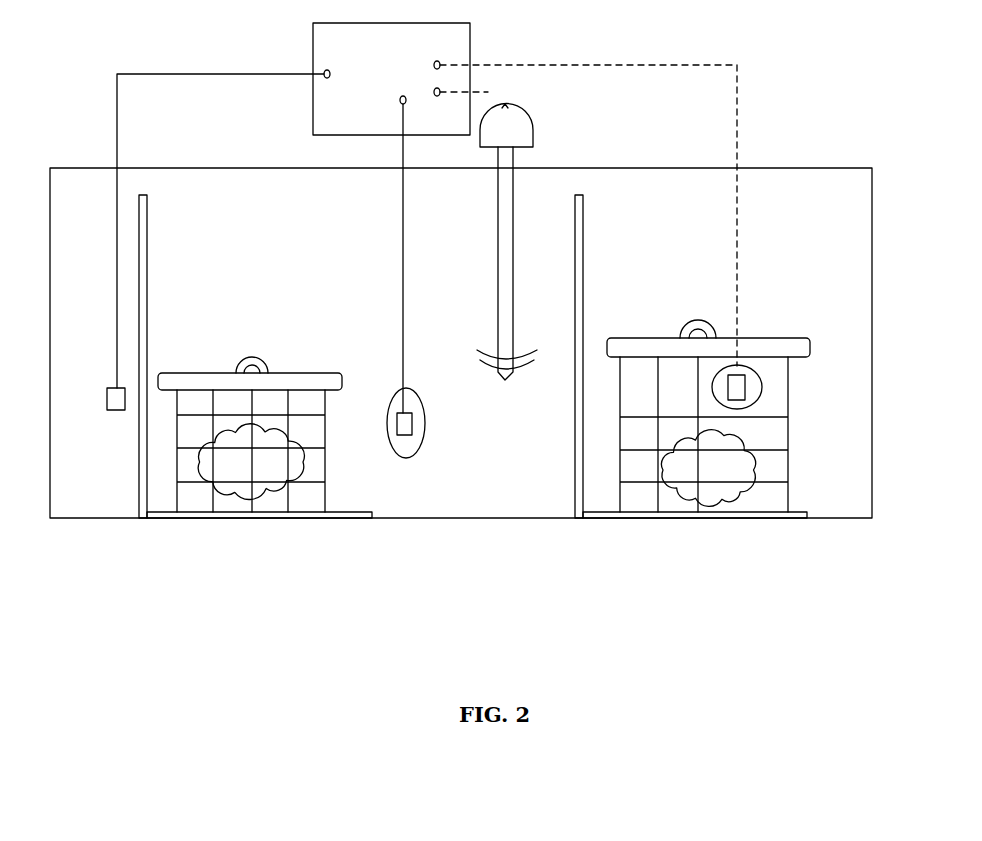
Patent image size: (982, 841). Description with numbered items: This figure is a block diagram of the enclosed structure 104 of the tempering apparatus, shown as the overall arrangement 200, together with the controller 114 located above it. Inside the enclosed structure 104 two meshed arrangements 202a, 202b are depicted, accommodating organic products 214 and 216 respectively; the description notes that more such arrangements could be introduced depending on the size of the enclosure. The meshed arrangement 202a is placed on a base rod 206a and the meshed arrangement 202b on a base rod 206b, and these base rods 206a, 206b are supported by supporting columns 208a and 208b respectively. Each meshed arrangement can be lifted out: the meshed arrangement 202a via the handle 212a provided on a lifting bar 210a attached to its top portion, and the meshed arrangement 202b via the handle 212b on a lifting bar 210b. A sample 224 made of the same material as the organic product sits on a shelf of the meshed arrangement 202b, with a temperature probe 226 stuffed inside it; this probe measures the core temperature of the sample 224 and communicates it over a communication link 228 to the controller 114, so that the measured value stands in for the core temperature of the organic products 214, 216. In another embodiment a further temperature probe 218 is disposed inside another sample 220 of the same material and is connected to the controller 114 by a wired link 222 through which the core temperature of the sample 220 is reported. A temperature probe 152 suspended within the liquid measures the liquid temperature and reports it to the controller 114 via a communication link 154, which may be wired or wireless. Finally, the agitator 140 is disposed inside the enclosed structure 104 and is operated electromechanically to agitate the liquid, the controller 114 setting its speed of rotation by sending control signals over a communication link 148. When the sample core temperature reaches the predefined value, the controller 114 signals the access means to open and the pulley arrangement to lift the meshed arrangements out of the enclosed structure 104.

The enclosed structure 104 is at (827, 201).
The controller 114 is at (405, 83).
The communication link 154 is at (116, 309).
The temperature probe 152 is at (108, 408).
The line 222 is at (405, 210).
The temperature probe 218 is at (414, 428).
The sample 220 is at (412, 412).
The agitator 140 is at (514, 134).
The communication link 228 is at (488, 66).
The communication link 148 is at (483, 96).
The supporting column 208a is at (148, 236).
The supporting column 208b is at (584, 236).
The base rod 206a is at (352, 518).
The base rod 206b is at (796, 516).
The lifting bar 210a is at (188, 367).
The lifting bar 210b is at (762, 347).
The meshed arrangement 202a is at (325, 497).
The meshed arrangement 202b is at (789, 448).
The handle 212a is at (260, 354).
The handle 212b is at (690, 316).
The organic product 214 is at (272, 454).
The organic product 216 is at (738, 457).
The sample 224 is at (760, 380).
The temperature probe 226 is at (748, 388).
The system 200 is at (478, 566).